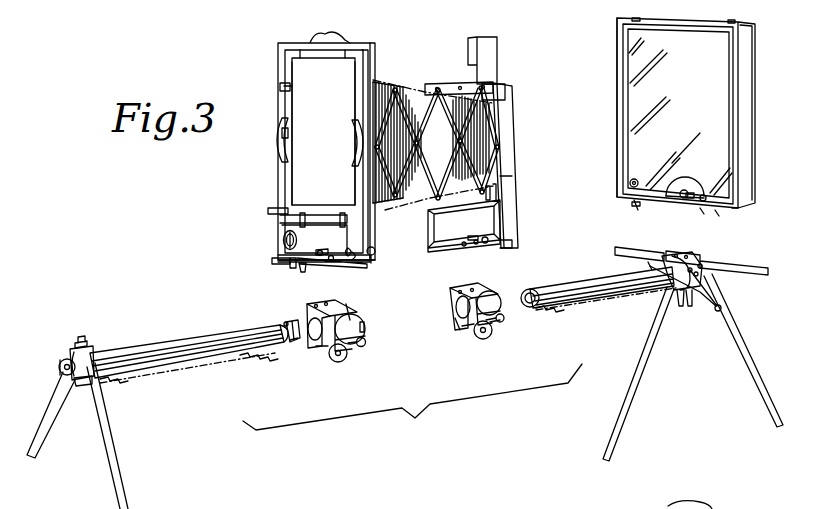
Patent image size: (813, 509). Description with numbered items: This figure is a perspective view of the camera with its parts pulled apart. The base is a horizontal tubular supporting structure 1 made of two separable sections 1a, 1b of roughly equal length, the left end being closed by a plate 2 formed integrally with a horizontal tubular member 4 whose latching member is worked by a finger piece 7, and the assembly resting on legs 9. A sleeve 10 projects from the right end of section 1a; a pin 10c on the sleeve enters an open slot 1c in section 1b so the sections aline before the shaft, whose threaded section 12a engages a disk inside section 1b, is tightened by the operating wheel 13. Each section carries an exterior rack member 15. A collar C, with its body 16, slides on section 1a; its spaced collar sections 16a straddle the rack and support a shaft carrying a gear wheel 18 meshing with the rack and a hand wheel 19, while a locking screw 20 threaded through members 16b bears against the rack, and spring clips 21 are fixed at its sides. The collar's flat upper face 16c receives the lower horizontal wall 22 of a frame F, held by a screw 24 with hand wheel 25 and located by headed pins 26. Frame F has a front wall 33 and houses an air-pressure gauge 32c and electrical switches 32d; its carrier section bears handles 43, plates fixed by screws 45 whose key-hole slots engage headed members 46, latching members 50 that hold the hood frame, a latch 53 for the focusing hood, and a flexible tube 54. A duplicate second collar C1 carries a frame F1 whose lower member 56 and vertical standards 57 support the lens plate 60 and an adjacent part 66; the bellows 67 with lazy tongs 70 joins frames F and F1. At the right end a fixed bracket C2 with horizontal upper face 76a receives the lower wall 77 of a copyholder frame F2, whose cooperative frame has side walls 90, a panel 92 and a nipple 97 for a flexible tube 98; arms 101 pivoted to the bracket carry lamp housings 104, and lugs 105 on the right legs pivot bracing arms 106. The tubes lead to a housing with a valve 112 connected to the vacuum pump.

The frame F is at (379, 58).
The frame F1 is at (518, 154).
The copyholder frame F2 is at (766, 142).
The horizontal tubular supporting structure 1 is at (149, 326).
The tubular section 1a is at (182, 335).
The tubular section 1b is at (578, 284).
The open slot 1c is at (530, 290).
The plate 2 is at (80, 380).
The horizontal tubular member 4 is at (71, 350).
The operating finger piece 7 is at (84, 344).
The leg 9 is at (100, 416).
The sleeve 10 is at (290, 342).
The pin 10c is at (286, 320).
The threaded section 12a is at (296, 340).
The operating wheel 13 is at (58, 364).
The rack member 15 is at (250, 352).
The carriage body 16 is at (352, 316).
The collar sections 16a is at (458, 320).
The members 16b is at (496, 326).
The flat upper face 16c is at (362, 302).
The gear wheel 18 is at (320, 348).
The operating hand wheel 19 is at (347, 354).
The locking screw 20 is at (366, 343).
The spring clips 21 is at (366, 328).
The lower horizontal wall 22 is at (372, 268).
The screw 24 is at (304, 270).
The operating hand wheel 25 is at (320, 248).
The headed pins 26 is at (720, 158).
The gauge 32c is at (283, 240).
The electrical switches 32d is at (357, 244).
The front wall 33 is at (372, 266).
The handles 43 is at (278, 142).
The screws 45 is at (289, 88).
The members 46 is at (281, 87).
The latching members 50 is at (305, 216).
The latch 53 is at (282, 132).
The flexible tube 54 is at (270, 212).
The lower horizontal member 56 is at (456, 246).
The vertical standards 57 is at (512, 186).
The lens plate 60 is at (504, 102).
The clip 66 is at (496, 196).
The bellows 67 is at (396, 96).
The lazy tongs 70 is at (425, 160).
The horizontal upper face 76a is at (668, 258).
The lower horizontal wall 77 is at (668, 188).
The vertical side walls 90 is at (619, 56).
The ground glass 92 is at (648, 98).
The nipple 97 is at (628, 182).
The flexible tube 98 is at (280, 259).
The arms 101 is at (722, 264).
The vertical housing 104 is at (492, 52).
The lug 105 is at (716, 316).
The arm 106 is at (676, 294).
The valve 112 is at (290, 266).
The collar C is at (338, 325).
The second collar C1 is at (488, 296).
The bracket C2 is at (702, 280).